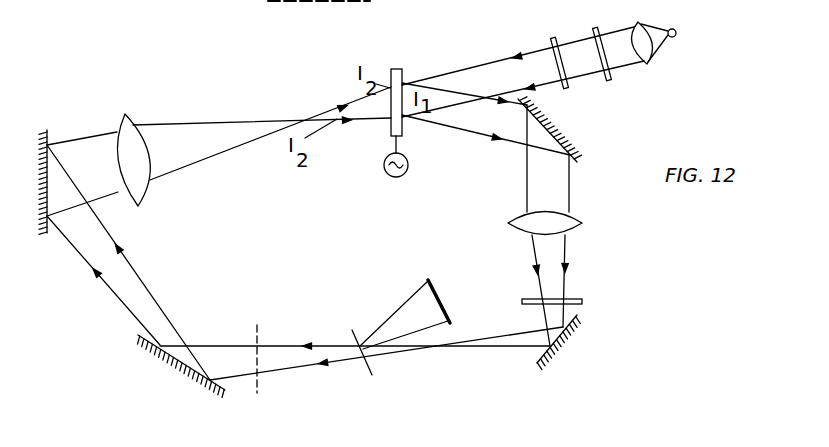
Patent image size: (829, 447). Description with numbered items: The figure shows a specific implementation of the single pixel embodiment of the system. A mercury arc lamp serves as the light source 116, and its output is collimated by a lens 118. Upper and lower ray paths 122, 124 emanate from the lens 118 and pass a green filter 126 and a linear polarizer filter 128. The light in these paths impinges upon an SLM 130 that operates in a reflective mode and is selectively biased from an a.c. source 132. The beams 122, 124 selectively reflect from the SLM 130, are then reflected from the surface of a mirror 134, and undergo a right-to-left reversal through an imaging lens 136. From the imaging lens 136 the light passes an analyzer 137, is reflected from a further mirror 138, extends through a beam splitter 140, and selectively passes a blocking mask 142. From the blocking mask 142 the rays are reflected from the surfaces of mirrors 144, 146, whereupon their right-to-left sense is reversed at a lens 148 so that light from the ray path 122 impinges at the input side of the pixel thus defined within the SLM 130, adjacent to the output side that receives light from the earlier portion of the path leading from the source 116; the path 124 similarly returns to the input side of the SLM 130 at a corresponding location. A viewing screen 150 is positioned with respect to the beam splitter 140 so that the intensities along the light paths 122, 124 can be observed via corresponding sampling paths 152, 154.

The light source 116 is at (676, 30).
The lens 118 is at (643, 25).
The upper ray path 122 is at (433, 77).
The lower ray path 124 is at (587, 75).
The green filter 126 is at (612, 77).
The linear polarizer filter 128 is at (550, 43).
The SLM 130 is at (390, 79).
The a.c. source 132 is at (412, 172).
The mirror 134 is at (562, 135).
The imaging lens 136 is at (572, 214).
The analyzer 137 is at (582, 298).
The mirror 138 is at (571, 328).
The beam splitter 140 is at (370, 366).
The blocking mask 142 is at (260, 332).
The mirror 144 is at (175, 365).
The mirror 146 is at (47, 138).
The lens 148 is at (128, 118).
The viewing screen 150 is at (440, 298).
The sampling path 152 is at (413, 298).
The sampling path 154 is at (430, 325).